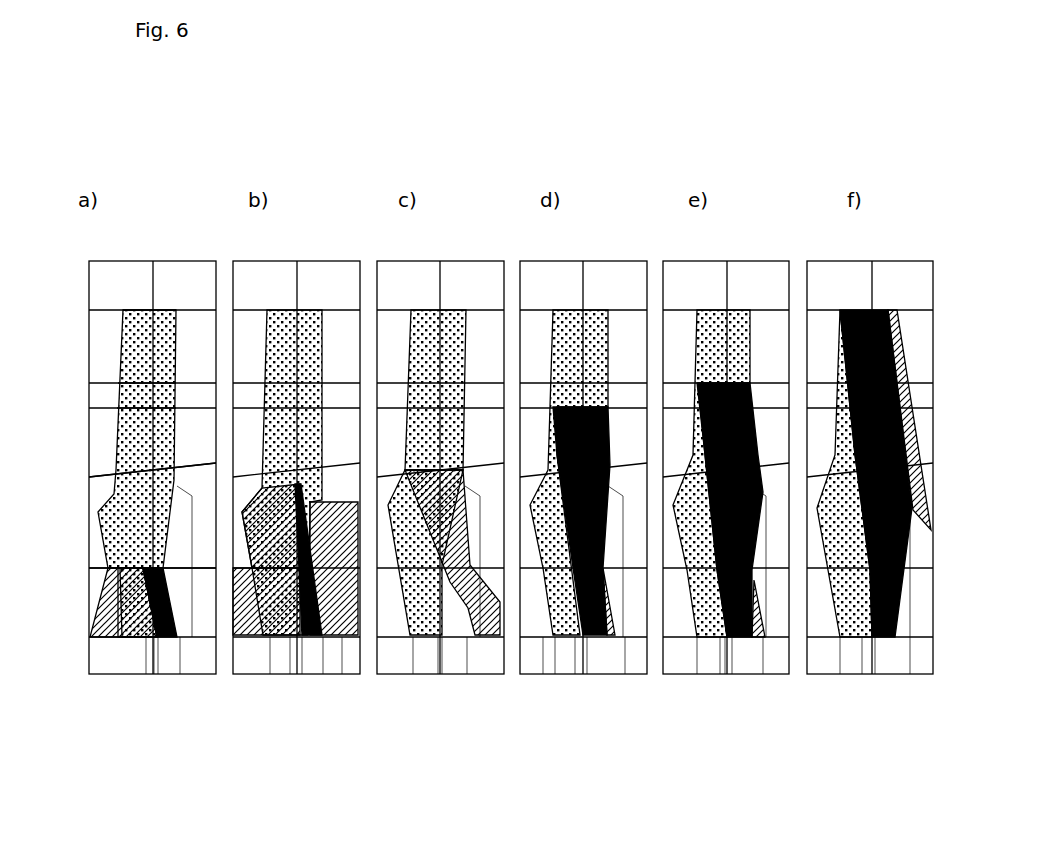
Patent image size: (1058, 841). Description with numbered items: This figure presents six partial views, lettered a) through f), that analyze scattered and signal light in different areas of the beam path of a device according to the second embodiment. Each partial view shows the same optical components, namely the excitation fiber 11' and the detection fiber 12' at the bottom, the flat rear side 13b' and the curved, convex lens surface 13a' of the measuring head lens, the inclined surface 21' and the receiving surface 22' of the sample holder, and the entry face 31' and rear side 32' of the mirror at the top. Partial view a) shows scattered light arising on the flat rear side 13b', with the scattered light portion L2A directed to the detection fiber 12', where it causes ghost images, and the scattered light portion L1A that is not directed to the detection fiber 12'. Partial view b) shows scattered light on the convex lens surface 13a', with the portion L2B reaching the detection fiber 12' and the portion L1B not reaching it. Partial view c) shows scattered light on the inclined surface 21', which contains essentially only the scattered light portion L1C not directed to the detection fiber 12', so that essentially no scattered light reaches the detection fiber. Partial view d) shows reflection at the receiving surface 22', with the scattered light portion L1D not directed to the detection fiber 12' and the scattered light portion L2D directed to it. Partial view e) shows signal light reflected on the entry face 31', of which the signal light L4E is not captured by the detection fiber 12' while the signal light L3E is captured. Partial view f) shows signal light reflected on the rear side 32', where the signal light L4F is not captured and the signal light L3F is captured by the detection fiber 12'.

The rear side of the mirror 32' is at (103, 285).
The entry face of the mirror 31' is at (102, 358).
The receiving surface of the sample holder 22' is at (99, 390).
The inclined surface of the holder 21' is at (119, 449).
The curved, convex lens surface 13a' is at (100, 439).
The flat rear side of the measuring head lens 13b' is at (117, 542).
The excitation fiber 11' is at (122, 678).
The detection fiber 12' is at (176, 660).
The scattered light portion L1A is at (107, 637).
The scattered light portion L2A is at (135, 645).
The scattered light portion L1B is at (345, 636).
The scattered light portion L2B is at (297, 636).
The scattered light portion L1C is at (470, 636).
The scattered light portion L1D is at (580, 637).
The scattered light portion L2D is at (592, 637).
The signal light L3E is at (737, 637).
The signal light L4E is at (755, 637).
The signal light L4F is at (868, 637).
The signal light L3F is at (883, 637).